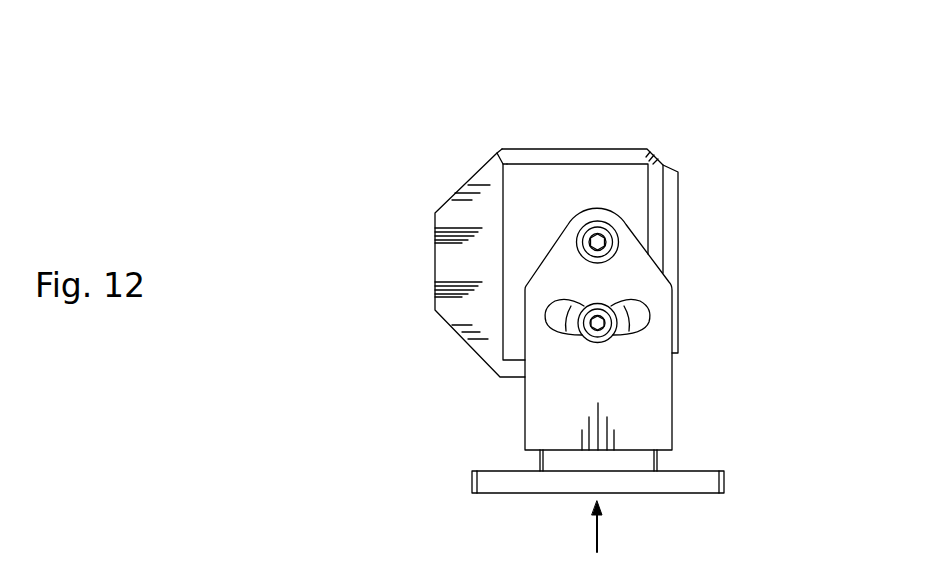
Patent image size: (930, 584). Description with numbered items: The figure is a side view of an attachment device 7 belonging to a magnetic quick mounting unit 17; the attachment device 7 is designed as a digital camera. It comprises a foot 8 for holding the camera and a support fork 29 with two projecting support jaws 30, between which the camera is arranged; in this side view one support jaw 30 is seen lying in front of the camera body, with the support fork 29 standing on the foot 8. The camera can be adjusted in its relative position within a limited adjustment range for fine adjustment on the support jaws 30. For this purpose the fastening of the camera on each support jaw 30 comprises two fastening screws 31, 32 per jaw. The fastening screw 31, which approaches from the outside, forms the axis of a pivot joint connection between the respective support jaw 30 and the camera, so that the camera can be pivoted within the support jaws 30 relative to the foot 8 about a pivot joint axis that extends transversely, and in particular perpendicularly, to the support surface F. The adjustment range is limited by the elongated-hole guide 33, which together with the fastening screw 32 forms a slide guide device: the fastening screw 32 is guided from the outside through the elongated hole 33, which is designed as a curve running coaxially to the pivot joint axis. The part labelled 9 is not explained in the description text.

The attachment device 7 is at (527, 195).
The foot 8 is at (668, 490).
The rear flange 9 is at (657, 218).
The magnetic quick mounting unit 17 is at (537, 135).
The support fork 29 is at (645, 432).
The support jaw 30 is at (657, 372).
The fastening screw 31 is at (598, 242).
The fastening screw 32 is at (590, 330).
The elongated-hole guide 33 is at (643, 313).
The support surface F is at (597, 538).